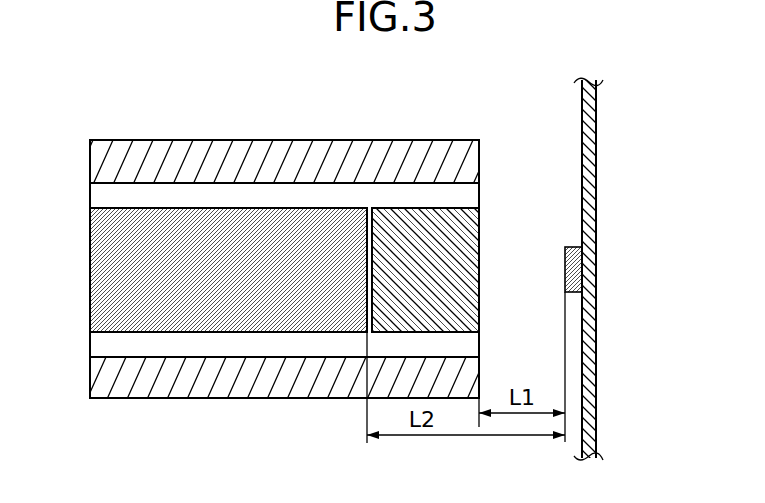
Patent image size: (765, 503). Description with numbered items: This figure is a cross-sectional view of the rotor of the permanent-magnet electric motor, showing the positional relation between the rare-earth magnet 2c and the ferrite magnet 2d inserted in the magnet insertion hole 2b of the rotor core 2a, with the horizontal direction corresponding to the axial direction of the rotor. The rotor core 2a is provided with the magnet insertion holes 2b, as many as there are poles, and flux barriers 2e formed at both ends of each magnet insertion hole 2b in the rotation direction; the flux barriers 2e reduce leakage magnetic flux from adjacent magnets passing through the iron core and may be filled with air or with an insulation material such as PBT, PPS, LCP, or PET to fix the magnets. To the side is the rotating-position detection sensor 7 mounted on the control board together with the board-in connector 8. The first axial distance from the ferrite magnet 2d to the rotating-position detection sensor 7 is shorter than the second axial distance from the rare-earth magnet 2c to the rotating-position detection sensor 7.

The rotor core 2a is at (477, 164).
The magnet insertion hole 2b is at (486, 273).
The rare-earth magnet 2c is at (217, 229).
The ferrite magnet 2d is at (414, 228).
The flux barrier 2e is at (477, 198).
The rotating-position detection sensor 7 is at (564, 278).
The board-in connector 8 is at (597, 312).